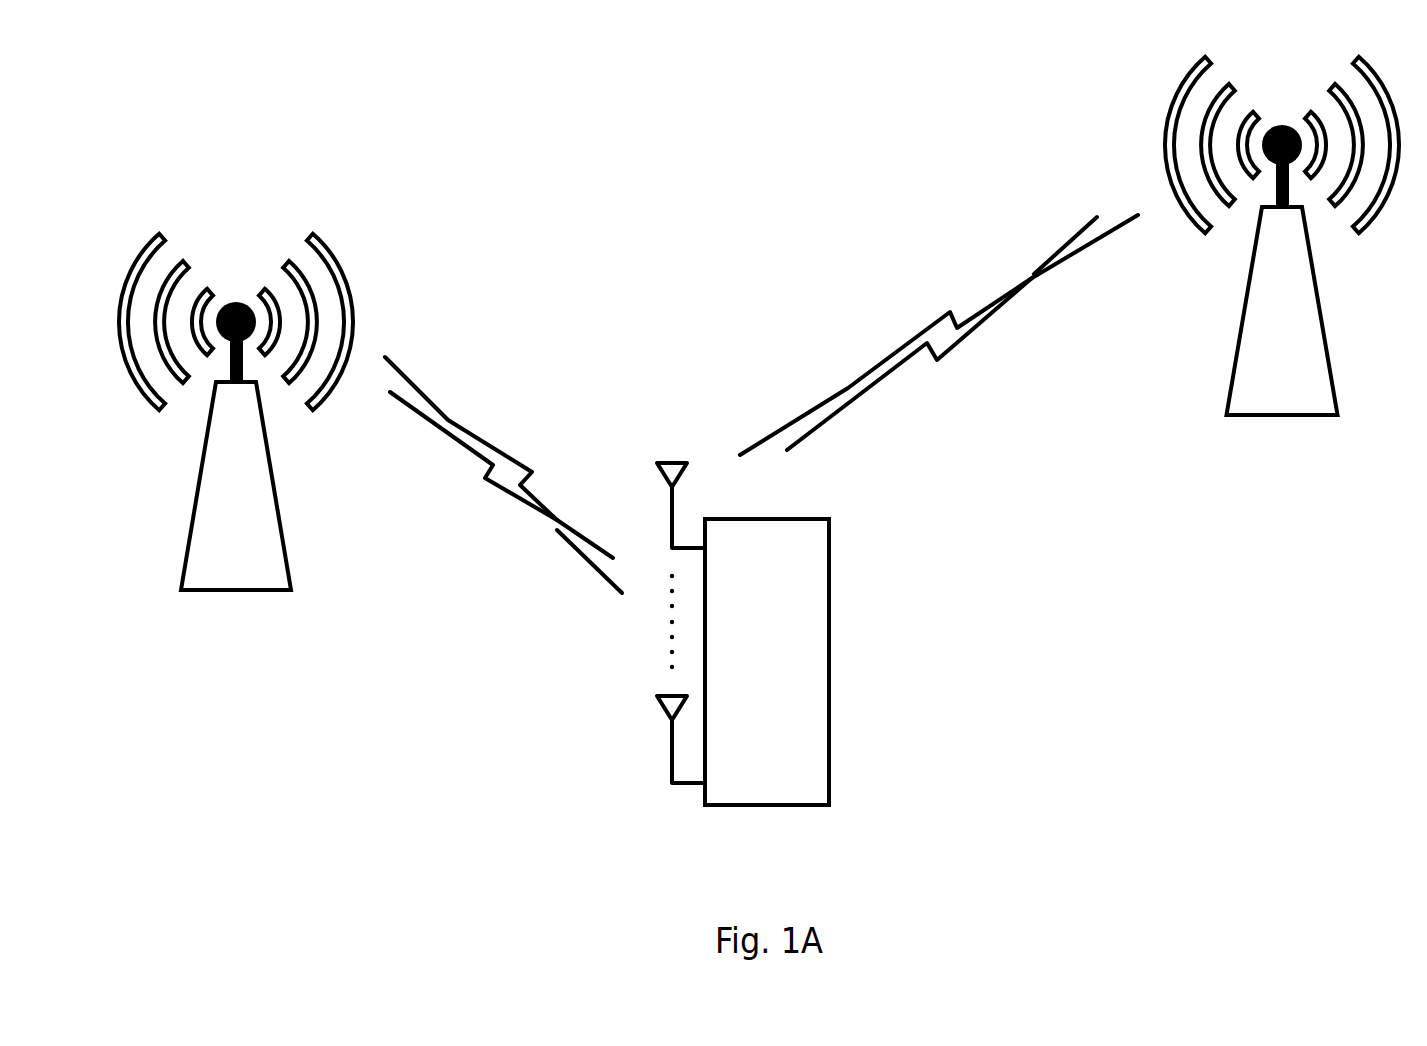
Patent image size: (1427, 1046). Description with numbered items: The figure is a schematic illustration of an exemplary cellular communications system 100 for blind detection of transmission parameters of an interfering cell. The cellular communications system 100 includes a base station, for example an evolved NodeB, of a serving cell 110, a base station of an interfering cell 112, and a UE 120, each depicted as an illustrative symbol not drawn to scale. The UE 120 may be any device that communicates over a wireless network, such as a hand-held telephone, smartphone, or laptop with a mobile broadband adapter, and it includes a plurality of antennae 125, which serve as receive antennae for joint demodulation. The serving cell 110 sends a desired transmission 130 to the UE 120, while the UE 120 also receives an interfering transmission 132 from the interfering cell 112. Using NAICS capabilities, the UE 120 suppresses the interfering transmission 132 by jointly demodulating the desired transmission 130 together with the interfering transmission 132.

The cellular communications system 100 is at (250, 70).
The serving cell 110 is at (275, 479).
The interfering cell 112 is at (1318, 285).
The UE 120 is at (830, 660).
The antennae 125 is at (670, 503).
The desired transmission 130 is at (447, 428).
The interfering transmission 132 is at (908, 345).